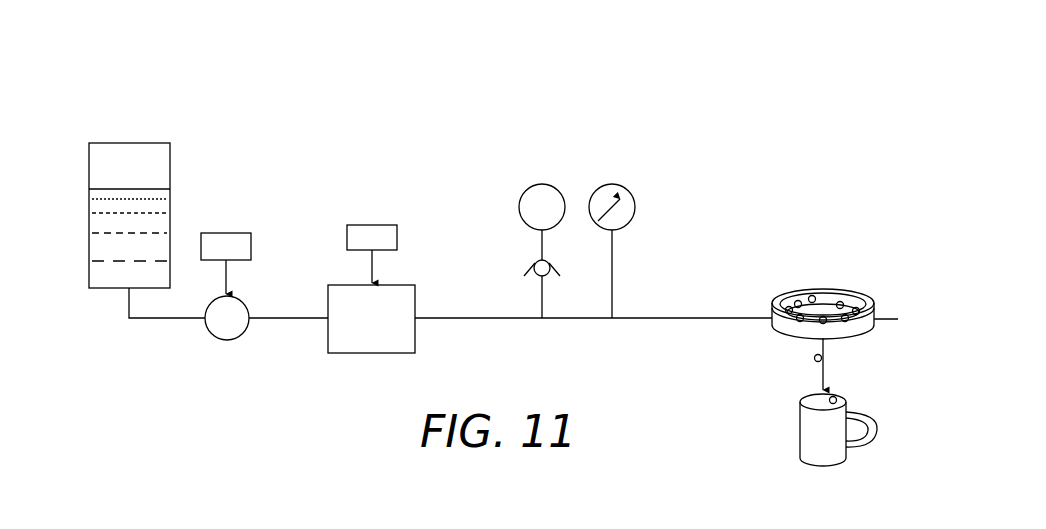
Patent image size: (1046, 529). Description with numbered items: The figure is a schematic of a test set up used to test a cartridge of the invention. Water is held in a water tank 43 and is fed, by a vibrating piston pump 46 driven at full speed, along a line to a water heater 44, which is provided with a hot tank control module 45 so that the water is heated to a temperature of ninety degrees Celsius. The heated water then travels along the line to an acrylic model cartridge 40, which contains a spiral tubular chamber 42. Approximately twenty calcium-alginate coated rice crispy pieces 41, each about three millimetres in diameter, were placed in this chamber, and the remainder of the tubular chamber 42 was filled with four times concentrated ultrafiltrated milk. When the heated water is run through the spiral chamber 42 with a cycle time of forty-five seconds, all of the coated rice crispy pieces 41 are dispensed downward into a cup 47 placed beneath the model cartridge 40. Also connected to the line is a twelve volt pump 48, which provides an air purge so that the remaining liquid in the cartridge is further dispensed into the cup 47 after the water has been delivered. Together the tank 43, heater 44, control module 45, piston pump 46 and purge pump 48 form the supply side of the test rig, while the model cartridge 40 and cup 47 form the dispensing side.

The model cartridge 40 is at (776, 297).
The Ca-Alginate coated rice crispy pieces 41 is at (811, 296).
The spiral tubular chamber 42 is at (837, 292).
The water tank 43 is at (171, 144).
The water heater 44 is at (328, 352).
The hot tank control module 45 is at (348, 227).
The vibrating piston pump 46 is at (214, 336).
The cup 47 is at (800, 431).
The pump 48 is at (519, 206).